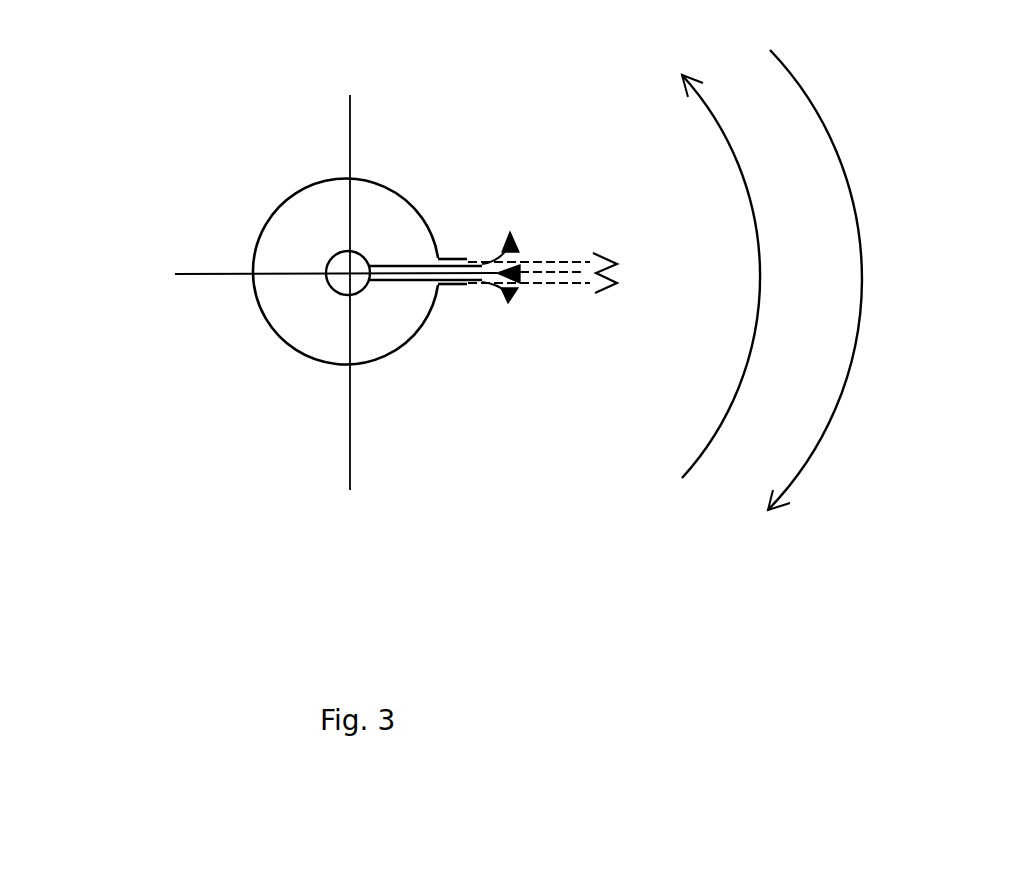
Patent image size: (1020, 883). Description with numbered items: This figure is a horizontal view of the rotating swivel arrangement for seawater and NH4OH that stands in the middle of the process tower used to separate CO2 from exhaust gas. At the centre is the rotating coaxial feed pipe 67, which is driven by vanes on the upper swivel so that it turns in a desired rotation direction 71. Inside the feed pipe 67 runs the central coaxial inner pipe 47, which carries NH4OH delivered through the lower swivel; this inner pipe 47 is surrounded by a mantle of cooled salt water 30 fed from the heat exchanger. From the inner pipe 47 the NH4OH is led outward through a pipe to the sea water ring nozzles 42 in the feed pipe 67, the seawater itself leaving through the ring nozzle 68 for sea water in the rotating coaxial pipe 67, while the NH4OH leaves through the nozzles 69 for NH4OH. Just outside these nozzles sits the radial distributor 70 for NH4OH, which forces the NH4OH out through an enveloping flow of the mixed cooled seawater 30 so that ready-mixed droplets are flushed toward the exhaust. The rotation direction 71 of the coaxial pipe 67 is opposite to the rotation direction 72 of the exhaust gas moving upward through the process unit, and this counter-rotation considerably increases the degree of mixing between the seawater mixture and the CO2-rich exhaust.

The cooled salt water 30 is at (383, 323).
The sea water ring nozzles 42 is at (457, 258).
The central coaxial inner pipe 47 is at (338, 262).
The rotating coaxial feed pipe 67 is at (265, 335).
The ring nozzle for sea water 68 is at (453, 285).
The nozzles for NH4OH 69 is at (477, 282).
The radial distributor for NH4OH 70 is at (527, 282).
The rotation direction for the coaxial pipe 71 is at (705, 254).
The rotation direction for the exhaust 72 is at (795, 292).